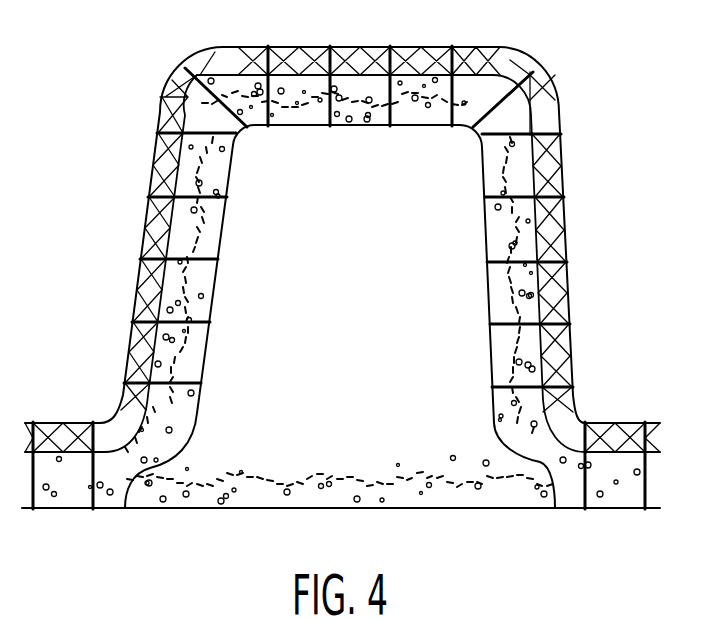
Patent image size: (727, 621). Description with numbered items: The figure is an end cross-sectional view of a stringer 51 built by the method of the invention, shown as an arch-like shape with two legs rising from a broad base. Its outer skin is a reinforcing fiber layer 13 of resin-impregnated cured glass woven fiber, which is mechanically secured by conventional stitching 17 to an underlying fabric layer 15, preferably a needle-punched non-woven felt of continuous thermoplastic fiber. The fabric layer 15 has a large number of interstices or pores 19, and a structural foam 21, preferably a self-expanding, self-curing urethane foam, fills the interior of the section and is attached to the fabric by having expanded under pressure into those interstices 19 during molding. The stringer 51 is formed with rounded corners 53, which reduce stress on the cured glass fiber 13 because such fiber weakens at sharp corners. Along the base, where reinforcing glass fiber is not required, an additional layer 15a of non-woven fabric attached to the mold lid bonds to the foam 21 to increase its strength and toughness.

The fiber layer 13 is at (490, 48).
The fabric layer 15 is at (522, 167).
The additional layer of non-woven fabric 15a is at (515, 508).
The stitching 17 is at (143, 265).
The interstices or pores 19 is at (195, 160).
The structural foam 21 is at (440, 293).
The stringer 51 is at (622, 73).
The rounded corners 53 is at (173, 77).